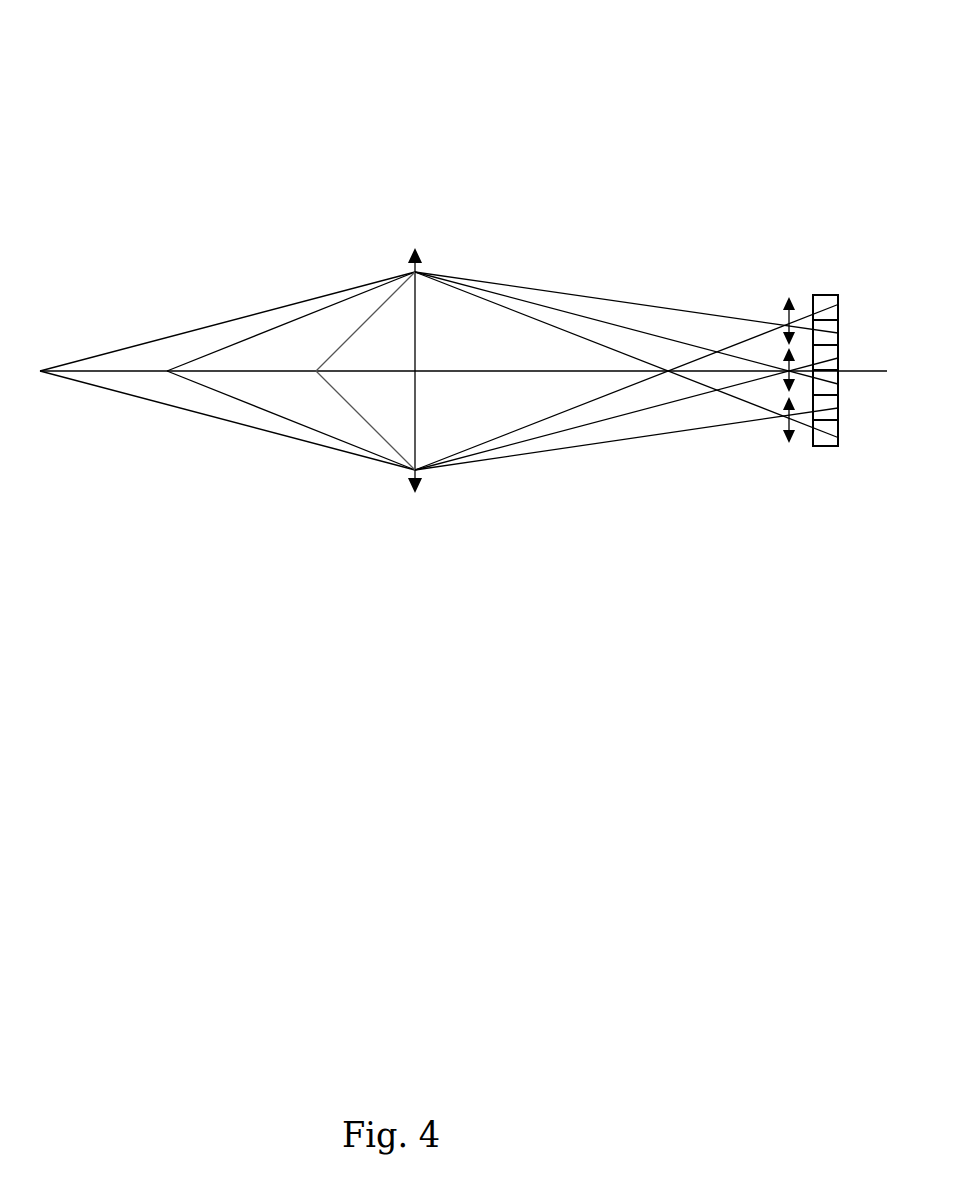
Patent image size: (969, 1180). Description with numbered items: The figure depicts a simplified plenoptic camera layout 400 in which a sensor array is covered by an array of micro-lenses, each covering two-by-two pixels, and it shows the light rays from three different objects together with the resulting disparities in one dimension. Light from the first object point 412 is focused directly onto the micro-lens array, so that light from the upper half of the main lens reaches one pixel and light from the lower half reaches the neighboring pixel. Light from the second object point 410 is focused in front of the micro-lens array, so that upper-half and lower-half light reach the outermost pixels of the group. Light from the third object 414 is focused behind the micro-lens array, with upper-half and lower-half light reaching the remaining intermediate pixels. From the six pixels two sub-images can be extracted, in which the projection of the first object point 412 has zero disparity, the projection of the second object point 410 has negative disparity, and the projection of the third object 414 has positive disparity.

The imaging system with lens and sensor 400 is at (210, 102).
The object point O2 410 is at (53, 410).
The object point O1 412 is at (177, 410).
The object O3 414 is at (335, 410).